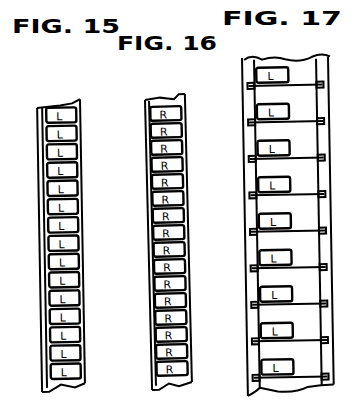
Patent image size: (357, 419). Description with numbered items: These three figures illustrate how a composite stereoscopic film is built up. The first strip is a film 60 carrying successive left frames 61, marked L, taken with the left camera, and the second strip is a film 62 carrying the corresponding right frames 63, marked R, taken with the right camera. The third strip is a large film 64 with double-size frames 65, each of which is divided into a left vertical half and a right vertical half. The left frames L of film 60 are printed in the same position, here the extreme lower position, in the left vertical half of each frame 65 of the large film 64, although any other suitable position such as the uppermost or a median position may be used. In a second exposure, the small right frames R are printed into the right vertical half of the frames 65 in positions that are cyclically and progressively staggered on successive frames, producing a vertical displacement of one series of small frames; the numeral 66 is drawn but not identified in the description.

In FIG. 15, the film 60 is at (82, 147).
In FIG. 15, the frames 61 is at (52, 108).
In FIG. 16, the film 62 is at (151, 357).
In FIG. 16, the frames 63 is at (161, 336).
In FIG. 17, the large film 64 is at (241, 92).
In FIG. 17, the frames 65 is at (269, 172).
In FIG. 17, the L marking 66 is at (263, 222).